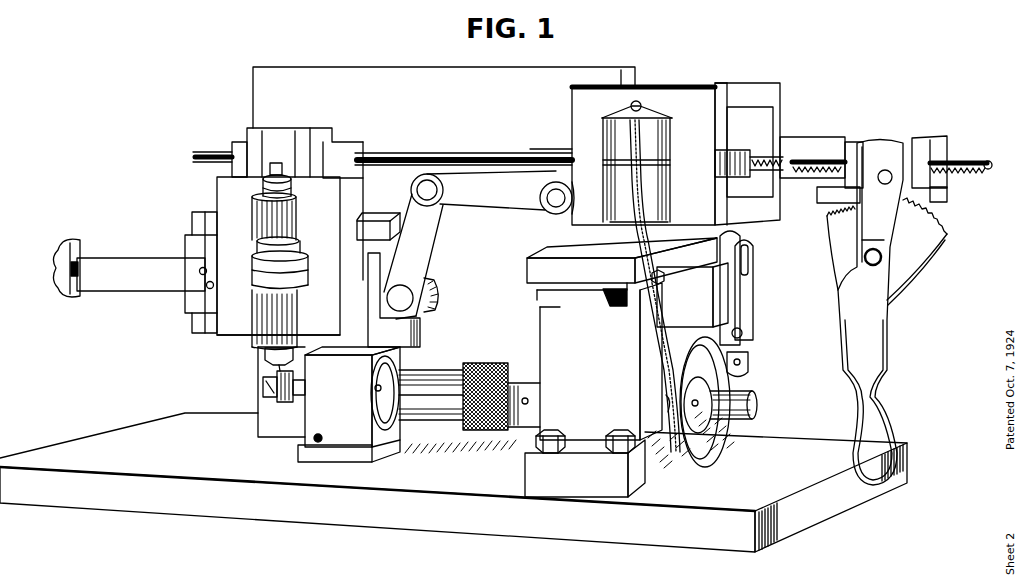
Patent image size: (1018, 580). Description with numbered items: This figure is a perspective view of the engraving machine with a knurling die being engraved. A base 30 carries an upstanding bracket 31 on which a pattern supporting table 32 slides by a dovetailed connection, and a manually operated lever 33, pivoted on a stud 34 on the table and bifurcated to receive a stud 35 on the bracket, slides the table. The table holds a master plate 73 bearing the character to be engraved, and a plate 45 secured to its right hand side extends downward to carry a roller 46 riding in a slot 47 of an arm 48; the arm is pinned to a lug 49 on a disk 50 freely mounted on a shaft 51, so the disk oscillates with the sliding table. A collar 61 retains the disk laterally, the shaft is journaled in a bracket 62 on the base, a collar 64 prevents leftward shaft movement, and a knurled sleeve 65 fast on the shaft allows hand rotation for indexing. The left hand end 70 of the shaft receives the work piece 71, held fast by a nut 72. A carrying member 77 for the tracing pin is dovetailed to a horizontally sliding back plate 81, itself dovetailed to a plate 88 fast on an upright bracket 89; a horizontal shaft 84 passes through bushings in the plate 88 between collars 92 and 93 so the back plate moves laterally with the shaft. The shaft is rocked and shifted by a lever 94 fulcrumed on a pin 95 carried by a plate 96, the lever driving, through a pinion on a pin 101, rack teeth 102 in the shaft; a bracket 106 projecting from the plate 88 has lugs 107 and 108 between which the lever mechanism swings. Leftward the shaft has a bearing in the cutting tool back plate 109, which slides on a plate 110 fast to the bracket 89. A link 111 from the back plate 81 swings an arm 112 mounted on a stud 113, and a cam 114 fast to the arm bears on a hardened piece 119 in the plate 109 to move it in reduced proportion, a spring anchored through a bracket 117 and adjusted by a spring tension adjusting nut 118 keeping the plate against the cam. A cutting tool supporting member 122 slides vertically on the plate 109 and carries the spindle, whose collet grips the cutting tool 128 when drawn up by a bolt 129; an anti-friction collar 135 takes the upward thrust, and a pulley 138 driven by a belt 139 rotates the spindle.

The base 30 is at (712, 540).
The upstanding bracket 31 is at (533, 466).
The pattern supporting table 32 is at (533, 273).
The manually operated lever 33 is at (662, 298).
The stud 34 is at (664, 280).
The stud 35 is at (673, 403).
The plate 45 is at (717, 308).
The roller 46 is at (737, 315).
The slot 47 is at (745, 265).
The arm 48 is at (740, 328).
The lug 49 is at (742, 362).
The disk 50 is at (700, 457).
The shaft 51 is at (415, 395).
The collar 61 is at (742, 389).
The bracket 62 is at (313, 417).
The collar 64 is at (410, 363).
The knurled sleeve 65 is at (465, 375).
The left hand end of shaft 70 is at (297, 408).
The work piece 71 is at (272, 397).
The nut 72 is at (267, 382).
The master plate 73 is at (601, 250).
The carrying member 77 is at (582, 110).
The back plate 81 is at (726, 82).
The horizontal shaft 84 is at (440, 152).
The plate 88 is at (750, 94).
The upright bracket 89 is at (366, 72).
The collar 92 is at (730, 153).
The collar 93 is at (540, 150).
The lever 94 is at (857, 290).
The pin 95 is at (865, 257).
The plate 96 is at (867, 237).
The pin 101 is at (885, 170).
The rack teeth 102 is at (976, 172).
The bracket 106 is at (795, 142).
The lug 107 is at (857, 143).
The lug 108 is at (920, 152).
The cutting tool back plate 109 is at (347, 147).
The plate 110 is at (420, 321).
The link 111 is at (478, 200).
The arm 112 is at (428, 234).
The stud 113 is at (410, 293).
The cam 114 is at (420, 298).
The bracket 117 is at (122, 267).
The spring tension adjusting nut 118 is at (74, 241).
The hardened piece 119 is at (370, 267).
The cutting tool supporting member 122 is at (242, 335).
The cutting tool 128 is at (278, 370).
The bolt 129 is at (276, 163).
The anti-friction collar 135 is at (263, 183).
The pulley 138 is at (256, 253).
The belt 139 is at (255, 277).